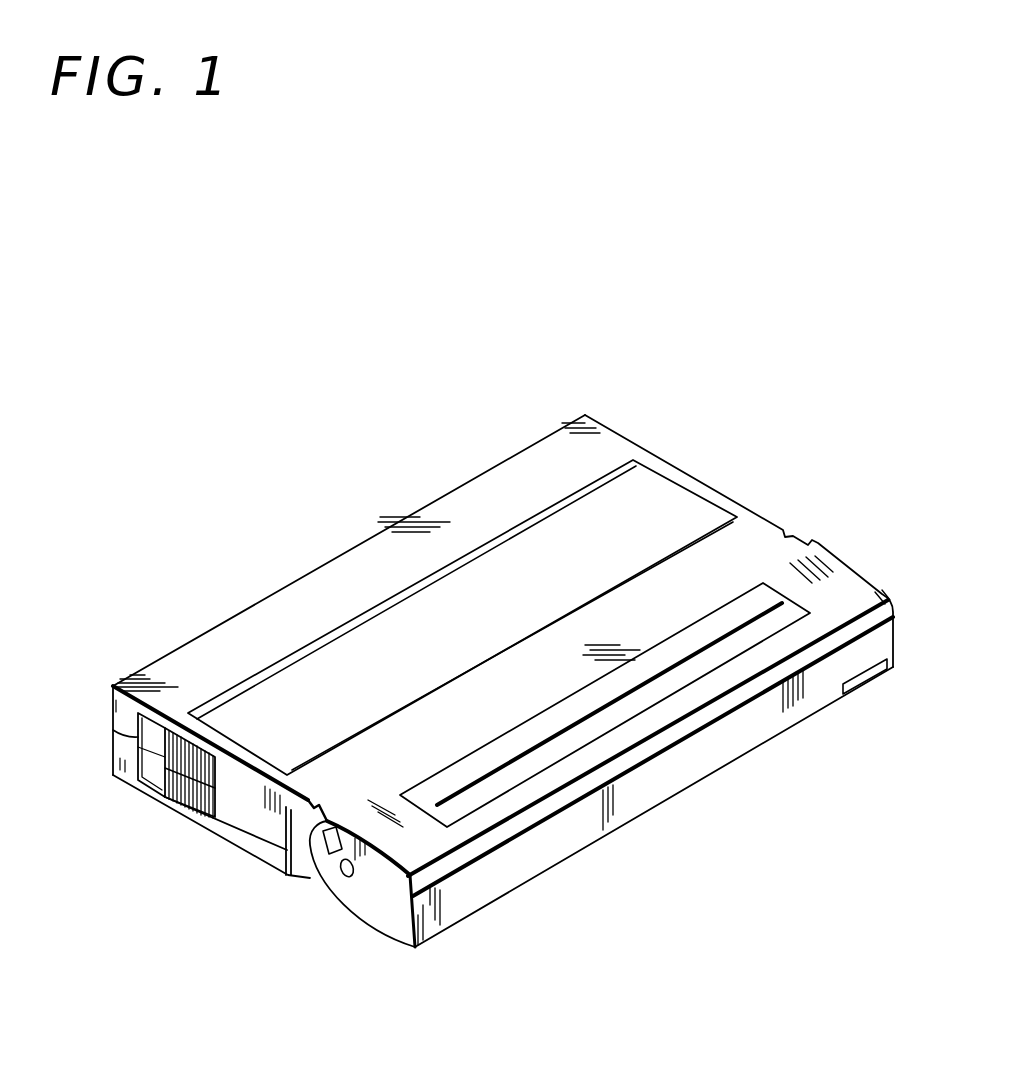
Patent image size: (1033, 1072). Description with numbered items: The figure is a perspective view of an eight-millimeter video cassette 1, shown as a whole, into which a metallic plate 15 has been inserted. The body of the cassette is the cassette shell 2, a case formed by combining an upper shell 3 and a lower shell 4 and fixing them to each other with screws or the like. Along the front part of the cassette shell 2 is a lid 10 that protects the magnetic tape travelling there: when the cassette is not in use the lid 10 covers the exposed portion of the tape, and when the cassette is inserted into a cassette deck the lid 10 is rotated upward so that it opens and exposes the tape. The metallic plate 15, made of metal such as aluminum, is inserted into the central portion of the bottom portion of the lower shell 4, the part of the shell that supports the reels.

The 8-mm video cassette 1 is at (378, 509).
The cassette shell 2 is at (300, 579).
The upper shell 3 is at (118, 722).
The lower shell 4 is at (123, 755).
The metallic plate 15 is at (232, 847).
The lid 10 is at (651, 786).